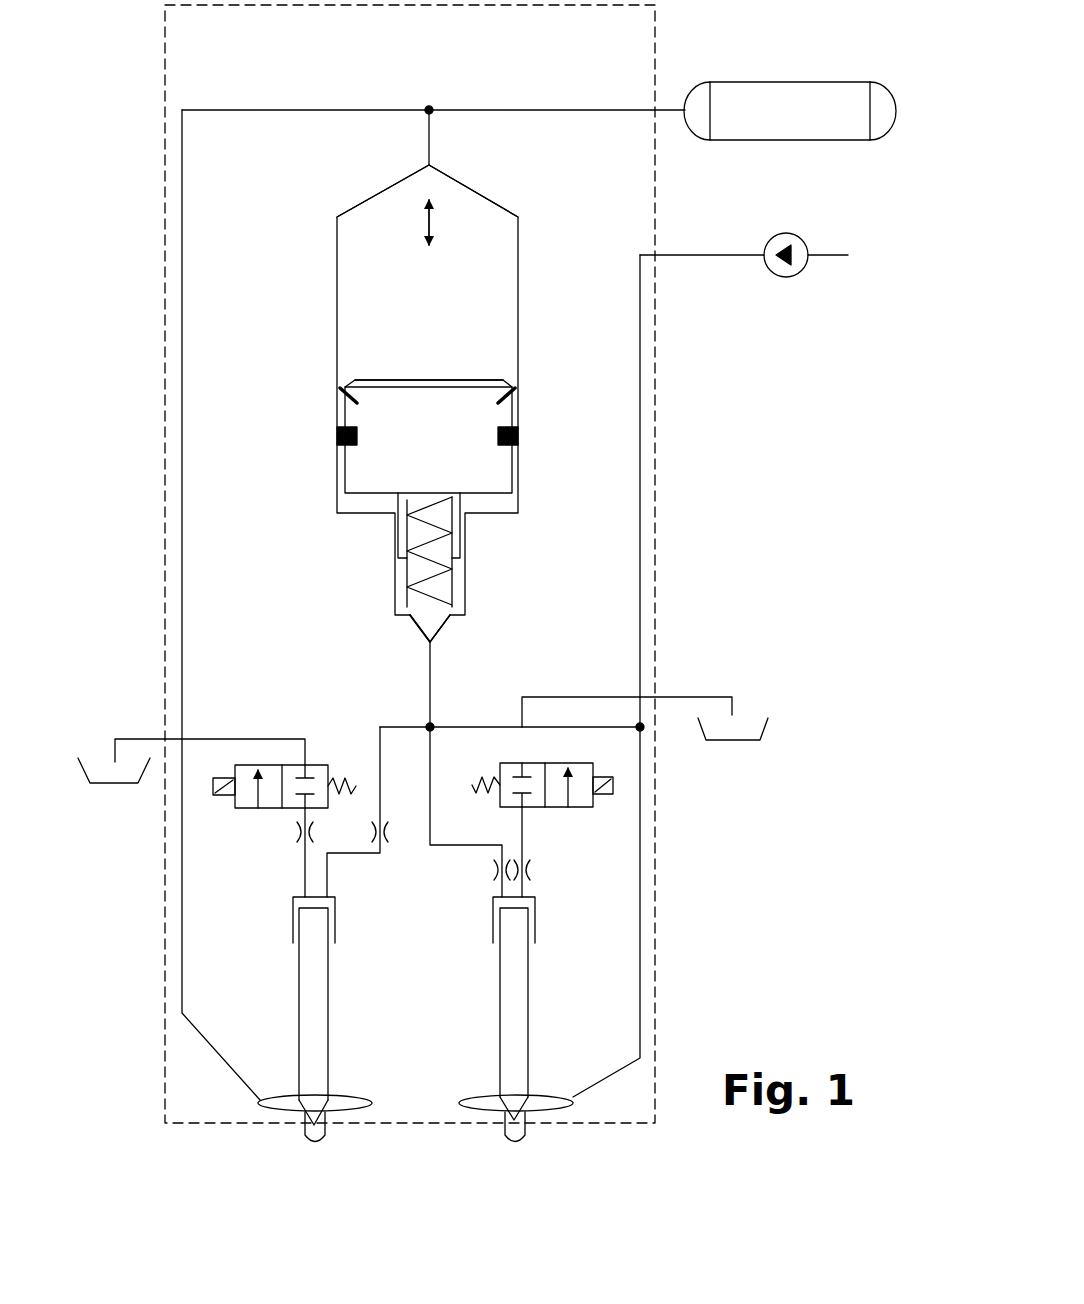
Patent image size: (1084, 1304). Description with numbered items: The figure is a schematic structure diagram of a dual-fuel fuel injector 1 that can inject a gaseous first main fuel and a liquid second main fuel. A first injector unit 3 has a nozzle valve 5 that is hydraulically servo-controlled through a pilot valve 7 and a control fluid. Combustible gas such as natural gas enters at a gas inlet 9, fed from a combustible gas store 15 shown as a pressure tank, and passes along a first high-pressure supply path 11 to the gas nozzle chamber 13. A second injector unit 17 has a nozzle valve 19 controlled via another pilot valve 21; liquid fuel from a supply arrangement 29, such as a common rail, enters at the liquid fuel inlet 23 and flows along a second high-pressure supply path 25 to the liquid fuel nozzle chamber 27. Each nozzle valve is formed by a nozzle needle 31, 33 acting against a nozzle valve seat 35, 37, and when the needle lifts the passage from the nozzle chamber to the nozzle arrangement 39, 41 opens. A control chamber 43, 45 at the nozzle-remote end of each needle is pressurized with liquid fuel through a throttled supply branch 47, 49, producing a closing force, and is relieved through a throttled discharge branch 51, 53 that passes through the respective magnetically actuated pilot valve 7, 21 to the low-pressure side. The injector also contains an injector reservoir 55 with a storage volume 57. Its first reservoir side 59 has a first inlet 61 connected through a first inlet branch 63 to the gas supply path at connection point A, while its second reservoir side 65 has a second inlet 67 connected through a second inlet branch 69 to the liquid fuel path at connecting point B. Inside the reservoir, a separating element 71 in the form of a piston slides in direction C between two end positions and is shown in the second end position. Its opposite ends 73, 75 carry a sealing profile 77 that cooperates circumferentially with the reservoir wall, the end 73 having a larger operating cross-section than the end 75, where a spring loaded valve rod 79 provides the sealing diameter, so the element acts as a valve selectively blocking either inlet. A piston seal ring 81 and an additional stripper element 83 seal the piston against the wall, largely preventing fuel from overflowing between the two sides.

The dual-fuel fuel injector 1 is at (664, 465).
The first injector unit 3 is at (330, 1028).
The nozzle valve 5 is at (298, 1105).
The servo or pilot valve 7 is at (257, 814).
The gas inlet 9 is at (656, 110).
The first high-pressure supply path 11 is at (187, 398).
The gas nozzle chamber 13 is at (353, 1100).
The combustible gas store 15 is at (790, 97).
The second injector unit 17 is at (504, 1035).
The nozzle valve 19 is at (531, 1104).
The servo or pilot valve 21 is at (549, 814).
The liquid fuel inlet 23 is at (656, 254).
The second high-pressure supply path 25 is at (639, 622).
The liquid fuel nozzle chamber 27 is at (481, 1100).
The supply arrangement 29 is at (766, 280).
The nozzle needle 31 is at (307, 980).
The nozzle needle 33 is at (521, 982).
The nozzle valve seat 35 is at (326, 1108).
The nozzle valve seat 37 is at (492, 1104).
The nozzle arrangement 39 is at (300, 1130).
The nozzle arrangement 41 is at (528, 1138).
The control chamber 43 is at (297, 903).
The control chamber 45 is at (500, 900).
The supply branch 47 is at (331, 881).
The supply branch 49 is at (471, 850).
The discharge branch 51 is at (206, 740).
The discharge branch 53 is at (609, 697).
The injector reservoir 55 is at (356, 250).
The storage volume 57 is at (435, 245).
The first reservoir side 59 is at (420, 184).
The first inlet 61 is at (436, 166).
The first inlet branch 63 is at (428, 156).
The second reservoir side 65 is at (400, 577).
The second inlet 67 is at (423, 640).
The second inlet branch 69 is at (441, 673).
The separating element 71 is at (428, 436).
The first end 73 is at (412, 378).
The second end 75 is at (442, 622).
The sealing profile 77 is at (506, 386).
The spring loaded valve rod 79 is at (456, 580).
The piston seal ring 81 is at (521, 434).
The stripper element 83 is at (340, 396).